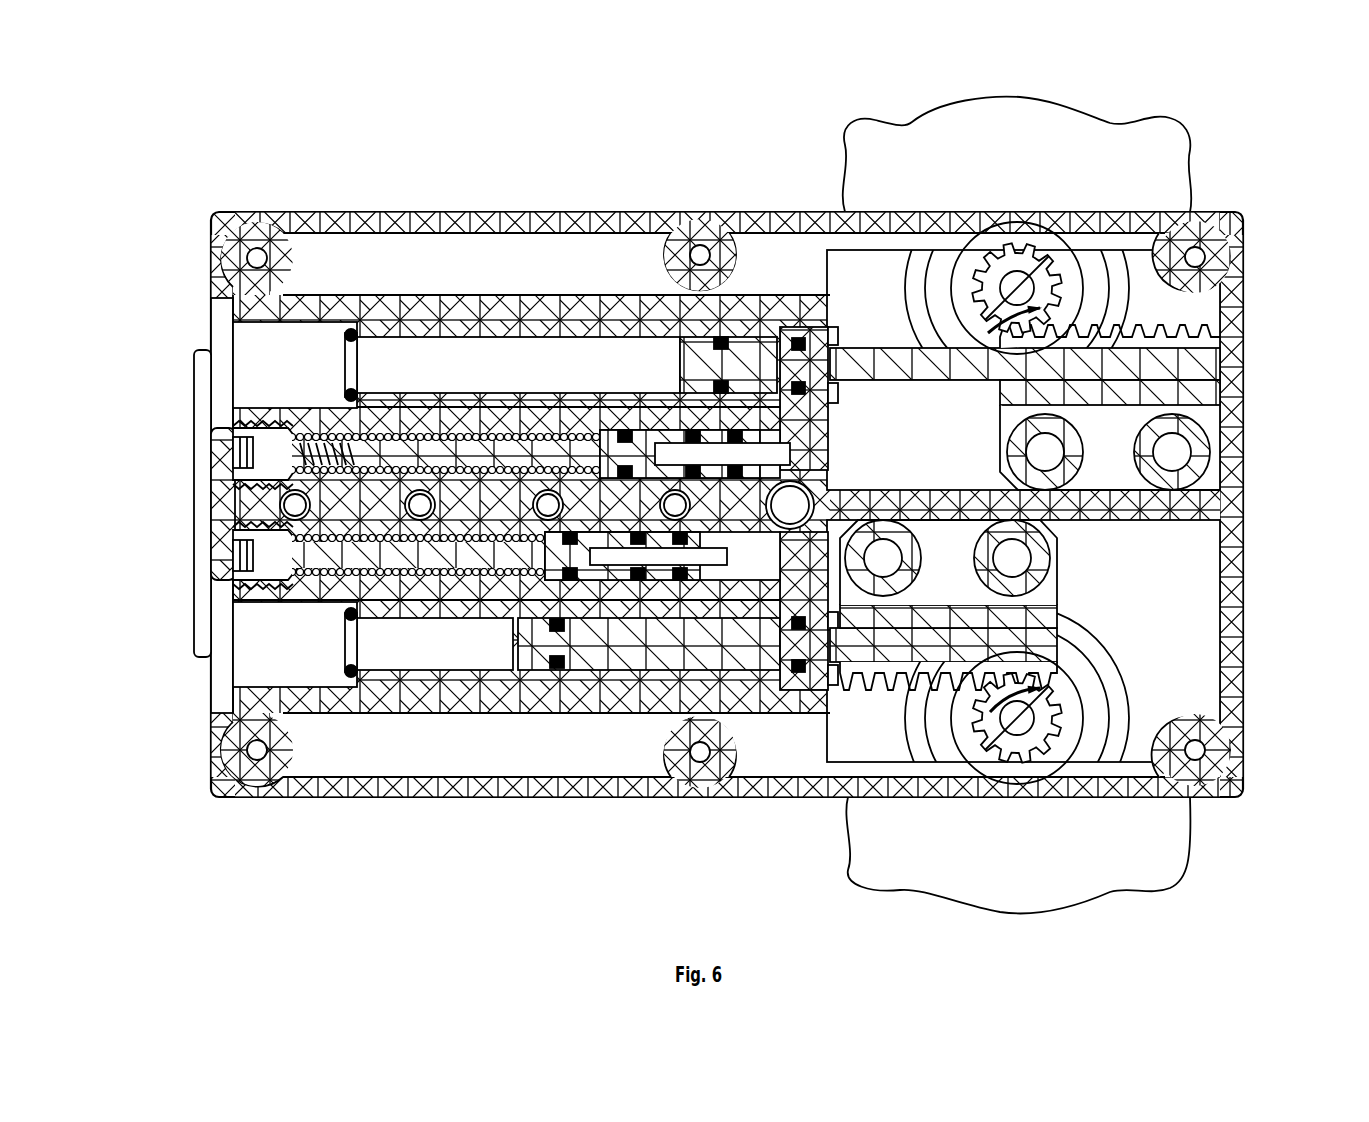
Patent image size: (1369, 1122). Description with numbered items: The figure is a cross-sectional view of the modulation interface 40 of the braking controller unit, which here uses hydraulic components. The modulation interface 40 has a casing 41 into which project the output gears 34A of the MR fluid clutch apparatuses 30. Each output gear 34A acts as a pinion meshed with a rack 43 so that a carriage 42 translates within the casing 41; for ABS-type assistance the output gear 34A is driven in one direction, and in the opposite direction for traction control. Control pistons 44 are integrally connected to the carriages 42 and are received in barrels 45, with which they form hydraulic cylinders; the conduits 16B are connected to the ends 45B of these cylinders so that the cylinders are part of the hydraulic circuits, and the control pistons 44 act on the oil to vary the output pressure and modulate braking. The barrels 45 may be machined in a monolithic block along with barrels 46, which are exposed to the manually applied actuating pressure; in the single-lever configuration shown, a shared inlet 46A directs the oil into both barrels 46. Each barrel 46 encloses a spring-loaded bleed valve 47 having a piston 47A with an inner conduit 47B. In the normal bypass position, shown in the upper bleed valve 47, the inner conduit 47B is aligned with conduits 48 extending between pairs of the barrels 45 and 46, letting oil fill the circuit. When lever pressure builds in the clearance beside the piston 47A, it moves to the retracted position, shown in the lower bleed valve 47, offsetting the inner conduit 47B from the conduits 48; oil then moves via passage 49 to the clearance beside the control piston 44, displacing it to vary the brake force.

The modulation interface 40 is at (232, 141).
The casing 41 is at (446, 212).
The MR fluid clutch apparatus 30 is at (1190, 152).
The conduit 16B is at (252, 370).
The barrel 45 is at (396, 336).
The end of hydraulic cylinder 45B is at (268, 358).
The control piston 44 is at (742, 348).
The barrel 46 is at (541, 427).
The shared inlet 46A is at (790, 505).
The spring-loaded bleed valve 47 is at (367, 457).
The piston 47A is at (613, 453).
The inner conduit 47B is at (757, 452).
The conduit 48 is at (657, 410).
The passage 49 is at (773, 407).
The rack 43 is at (1192, 339).
The carriage 42 is at (1204, 386).
The output gear 34A is at (1045, 284).